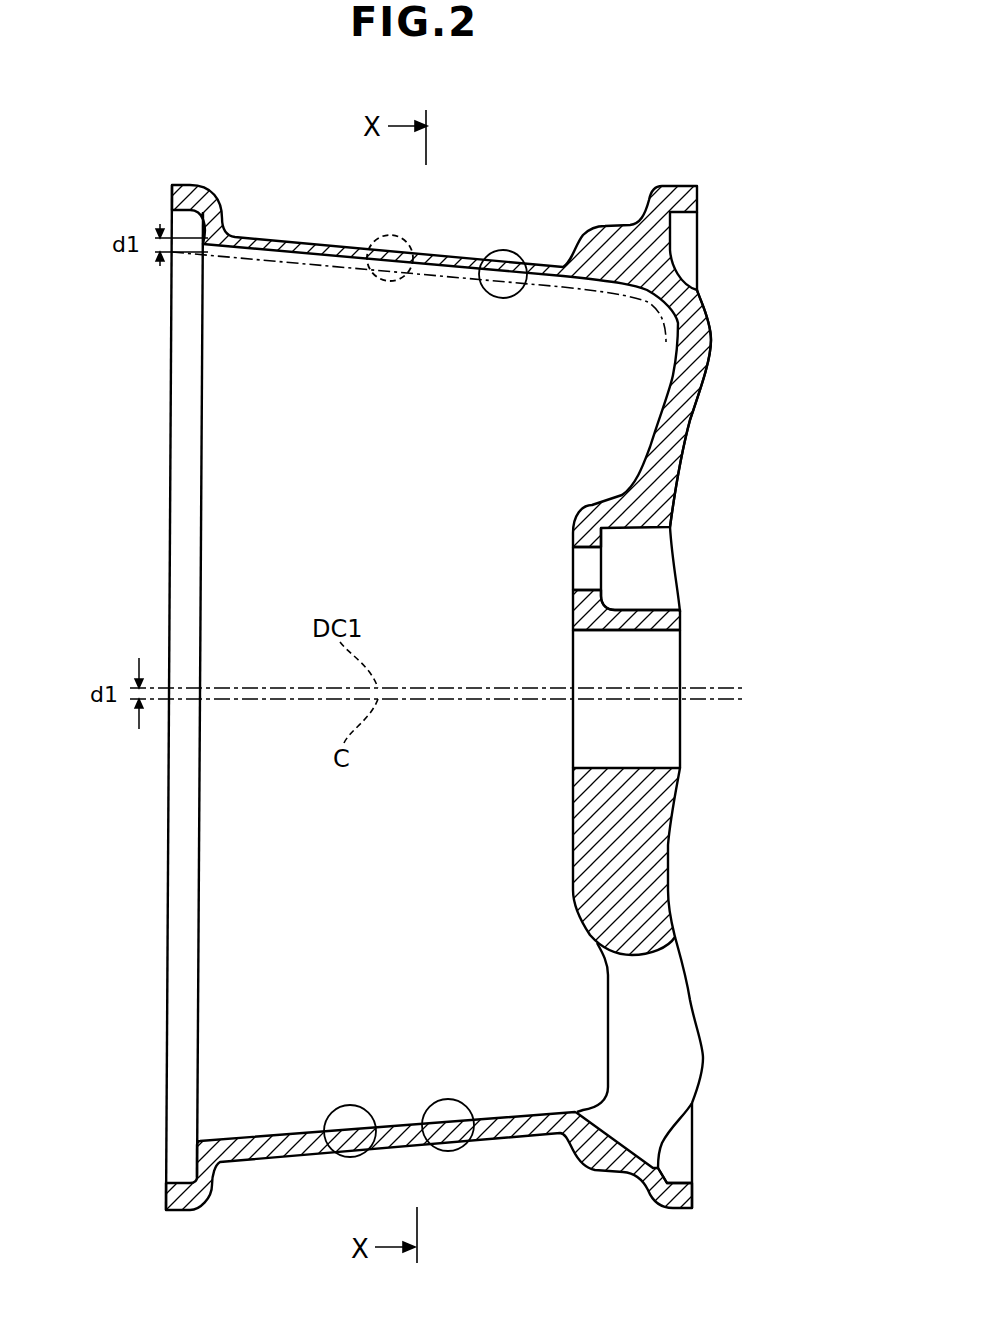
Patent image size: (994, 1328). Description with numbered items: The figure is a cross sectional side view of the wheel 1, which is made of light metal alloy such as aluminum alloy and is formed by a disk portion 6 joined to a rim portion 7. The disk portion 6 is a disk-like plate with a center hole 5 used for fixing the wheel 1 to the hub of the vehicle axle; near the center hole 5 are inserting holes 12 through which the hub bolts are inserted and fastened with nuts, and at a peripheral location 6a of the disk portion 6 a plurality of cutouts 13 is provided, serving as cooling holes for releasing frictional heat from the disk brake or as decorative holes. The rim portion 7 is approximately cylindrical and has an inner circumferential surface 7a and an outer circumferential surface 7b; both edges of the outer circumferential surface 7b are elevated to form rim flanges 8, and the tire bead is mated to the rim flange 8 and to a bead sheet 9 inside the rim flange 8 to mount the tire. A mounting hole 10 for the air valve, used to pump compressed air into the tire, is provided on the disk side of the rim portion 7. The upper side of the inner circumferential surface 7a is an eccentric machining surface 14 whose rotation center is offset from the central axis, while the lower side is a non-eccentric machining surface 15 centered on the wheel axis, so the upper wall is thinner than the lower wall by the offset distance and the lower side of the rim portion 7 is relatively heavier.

The wheel 1 is at (745, 239).
The center hole 5 is at (663, 667).
The disk portion 6 is at (668, 897).
The peripheral location of the disk 6a is at (708, 343).
The rim portion 7 is at (340, 240).
The inner circumferential surface 7a is at (397, 241).
The outer circumferential surface 7b is at (455, 250).
The rim flange 8 is at (190, 183).
The bead sheet 9 is at (300, 1165).
The mounting hole for the air valve 10 is at (667, 1128).
The inserting hole 12 is at (655, 570).
The cutout 13 is at (685, 1057).
The eccentric machining surface 14 is at (503, 252).
The non-eccentric machining surface 15 is at (432, 1148).